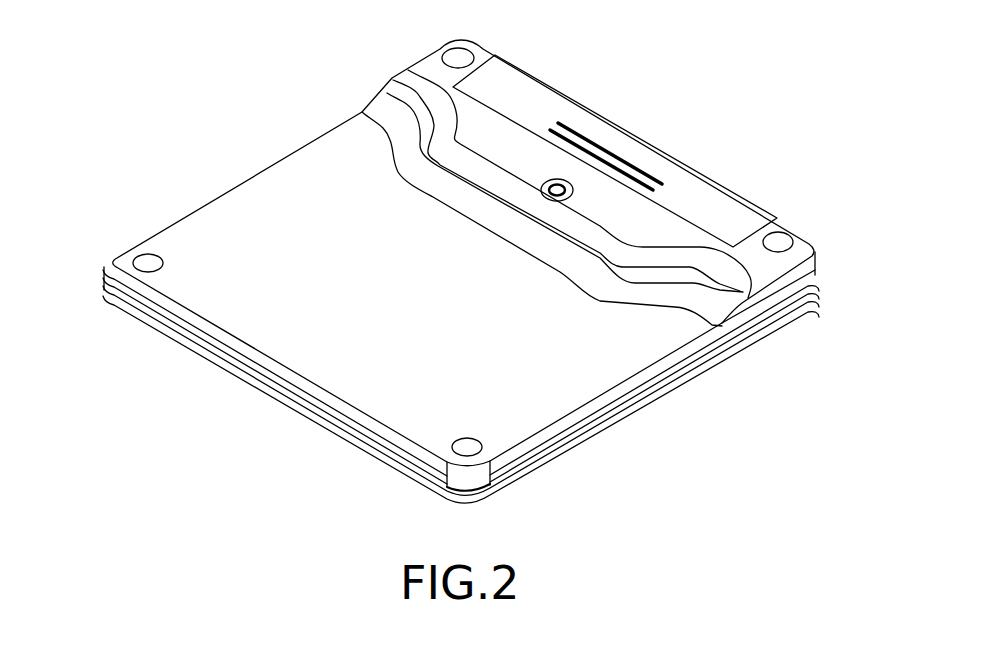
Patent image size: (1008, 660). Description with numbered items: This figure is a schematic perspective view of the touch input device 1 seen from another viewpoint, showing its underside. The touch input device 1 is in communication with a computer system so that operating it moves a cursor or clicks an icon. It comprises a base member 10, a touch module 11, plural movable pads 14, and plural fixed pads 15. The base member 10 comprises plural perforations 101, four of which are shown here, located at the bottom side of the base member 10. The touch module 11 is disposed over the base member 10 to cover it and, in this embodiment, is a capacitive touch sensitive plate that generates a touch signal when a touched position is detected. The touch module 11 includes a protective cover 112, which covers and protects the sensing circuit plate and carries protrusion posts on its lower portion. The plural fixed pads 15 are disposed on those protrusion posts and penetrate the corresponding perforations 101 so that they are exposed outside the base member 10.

The touch input device 1 is at (761, 99).
The base member 10 is at (311, 160).
The touch module 11 is at (724, 372).
The protective cover 112 is at (784, 323).
The movable pads 14 is at (153, 261).
The fixed pads 15 is at (460, 58).
The perforations 101 is at (442, 52).